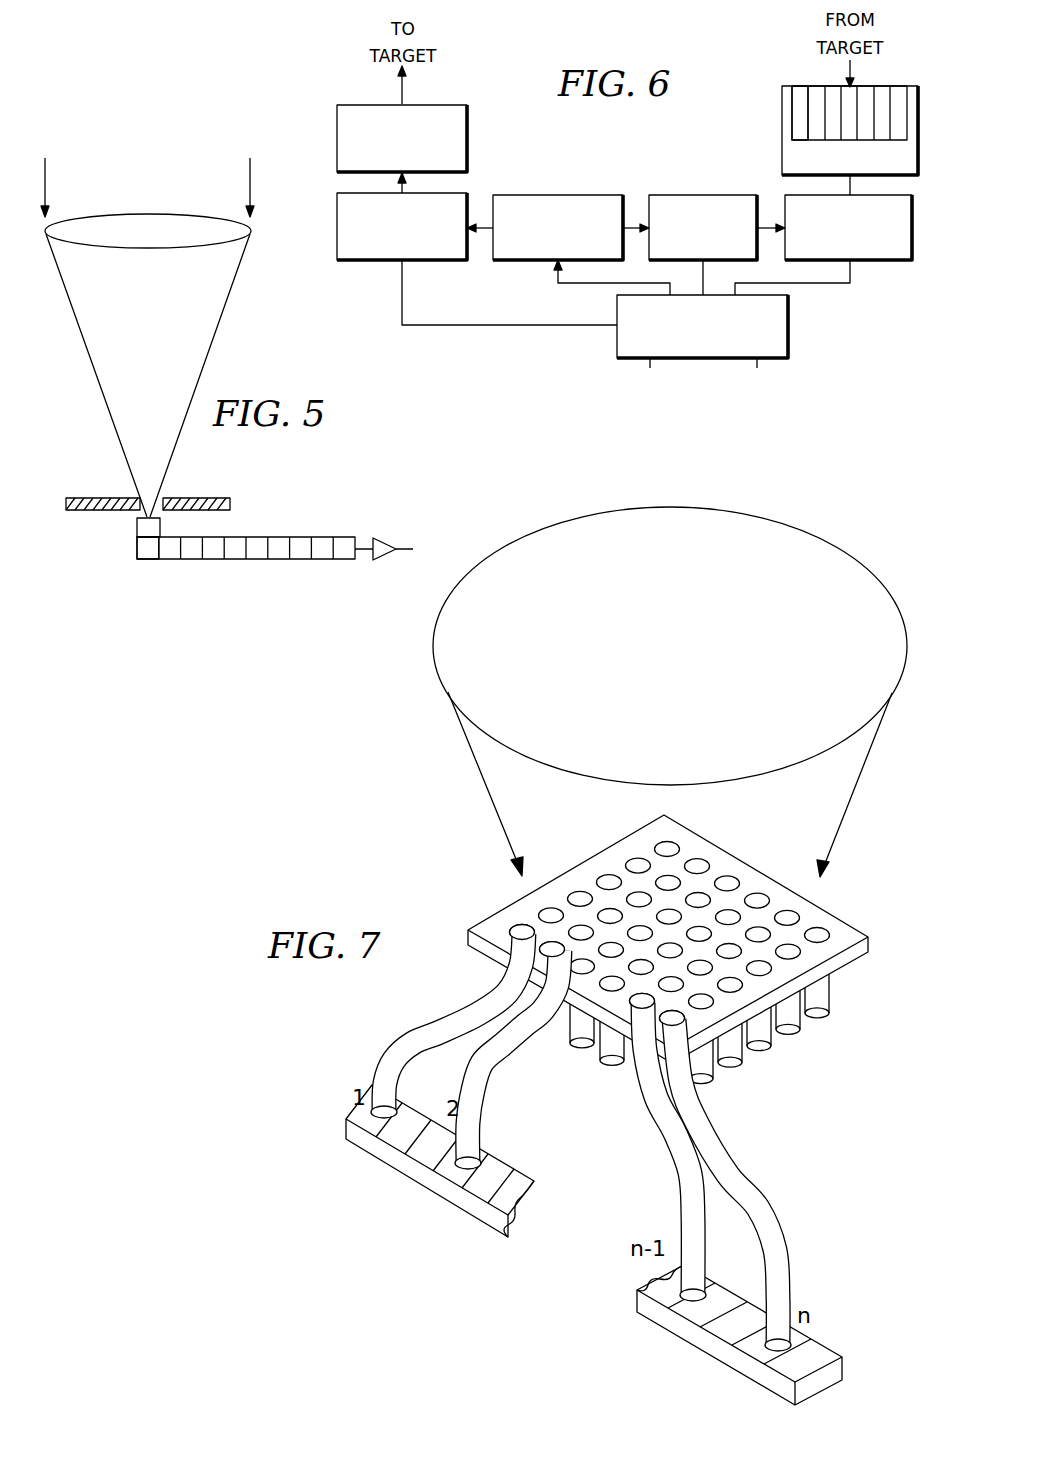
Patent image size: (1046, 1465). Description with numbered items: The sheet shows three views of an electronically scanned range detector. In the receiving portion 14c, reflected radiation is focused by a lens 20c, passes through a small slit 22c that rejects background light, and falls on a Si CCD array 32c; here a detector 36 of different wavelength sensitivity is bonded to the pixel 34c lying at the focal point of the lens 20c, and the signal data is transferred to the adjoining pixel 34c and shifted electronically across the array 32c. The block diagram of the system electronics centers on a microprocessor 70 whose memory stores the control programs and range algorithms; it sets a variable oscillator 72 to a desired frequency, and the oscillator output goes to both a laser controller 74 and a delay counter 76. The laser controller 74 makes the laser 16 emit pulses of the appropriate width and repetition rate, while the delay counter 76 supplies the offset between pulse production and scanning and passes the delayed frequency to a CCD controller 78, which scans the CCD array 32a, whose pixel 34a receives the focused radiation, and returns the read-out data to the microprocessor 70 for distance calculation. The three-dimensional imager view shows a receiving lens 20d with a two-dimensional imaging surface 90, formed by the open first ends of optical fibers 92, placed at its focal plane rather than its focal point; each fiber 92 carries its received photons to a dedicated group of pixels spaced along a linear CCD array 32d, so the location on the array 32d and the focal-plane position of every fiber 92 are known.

In FIG. 5, the radiation receiving portion 14c is at (83, 459).
In FIG. 6, the laser 16 is at (468, 139).
In FIG. 5, the lens 20c is at (103, 228).
In FIG. 7, the receiving lens 20d is at (838, 564).
In FIG. 5, the slit 22c is at (212, 497).
In FIG. 6, the CCD array 32a is at (782, 128).
In FIG. 5, the Si CCD array 32c is at (310, 510).
In FIG. 7, the linear CCD array 32d is at (412, 1172).
In FIG. 6, the CCD pixel 34a is at (800, 95).
In FIG. 5, the pixel 34c is at (145, 561).
In FIG. 5, the detector 36 is at (137, 527).
In FIG. 6, the microprocessor 70 is at (790, 331).
In FIG. 6, the variable oscillator 72 is at (558, 194).
In FIG. 6, the laser controller 74 is at (378, 262).
In FIG. 6, the delay counter 76 is at (708, 194).
In FIG. 6, the CCD controller 78 is at (871, 264).
In FIG. 7, the imaging surface 90 is at (466, 908).
In FIG. 7, the optical fibers 92 is at (512, 921).